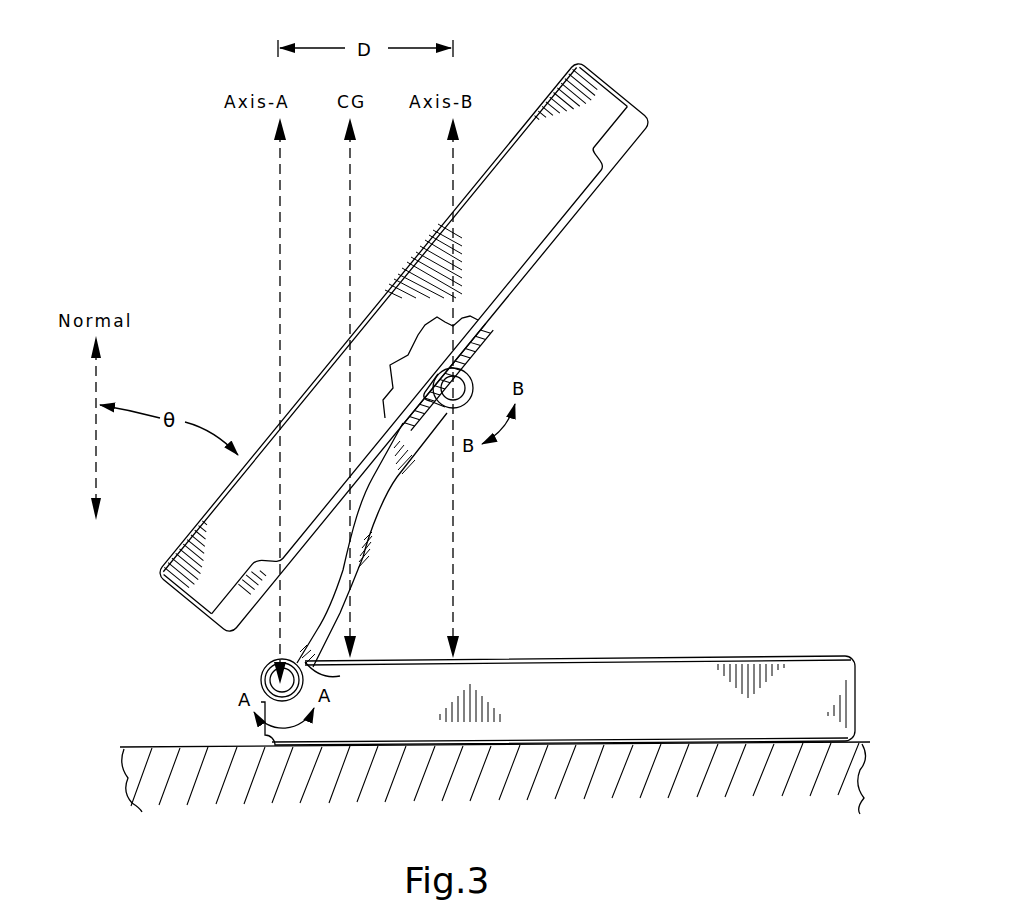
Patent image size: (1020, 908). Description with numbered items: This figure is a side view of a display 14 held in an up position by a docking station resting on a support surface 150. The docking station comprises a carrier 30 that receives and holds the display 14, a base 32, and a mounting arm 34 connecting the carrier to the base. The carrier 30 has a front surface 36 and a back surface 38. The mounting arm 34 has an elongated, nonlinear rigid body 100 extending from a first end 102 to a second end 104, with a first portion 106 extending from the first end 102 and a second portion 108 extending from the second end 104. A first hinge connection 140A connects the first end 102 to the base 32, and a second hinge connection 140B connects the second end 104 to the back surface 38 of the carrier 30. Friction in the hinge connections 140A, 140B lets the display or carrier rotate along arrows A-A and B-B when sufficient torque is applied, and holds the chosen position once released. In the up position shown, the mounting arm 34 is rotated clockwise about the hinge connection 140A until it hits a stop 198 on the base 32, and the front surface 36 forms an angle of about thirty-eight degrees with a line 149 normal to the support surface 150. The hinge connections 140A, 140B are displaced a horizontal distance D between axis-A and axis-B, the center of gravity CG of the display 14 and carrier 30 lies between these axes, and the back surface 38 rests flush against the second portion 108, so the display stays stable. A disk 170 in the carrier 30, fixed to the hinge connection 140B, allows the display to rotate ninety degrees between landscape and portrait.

The display 14 is at (572, 187).
The carrier 30 is at (413, 342).
The base 32 is at (622, 692).
The mounting arm 34 is at (440, 522).
The front surface 36 is at (555, 83).
The back surface 38 is at (570, 220).
The rigid body 100 is at (377, 523).
The first end 102 is at (258, 666).
The second end 104 is at (523, 427).
The first portion 106 is at (375, 557).
The second portion 108 is at (410, 445).
The first hinge connection 140A is at (258, 682).
The second hinge connection 140B is at (482, 362).
The normal line 149 is at (98, 376).
The support surface 150 is at (165, 746).
The disk 170 is at (477, 334).
The stop 198 is at (305, 670).